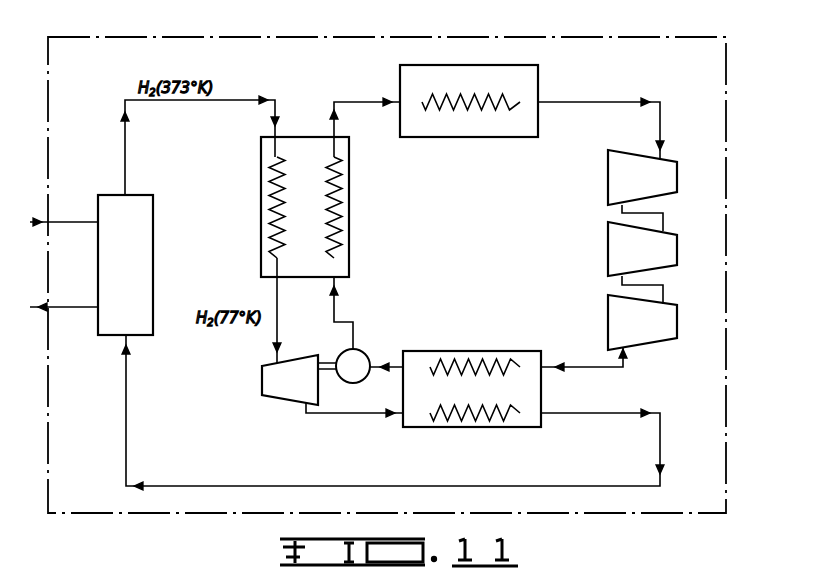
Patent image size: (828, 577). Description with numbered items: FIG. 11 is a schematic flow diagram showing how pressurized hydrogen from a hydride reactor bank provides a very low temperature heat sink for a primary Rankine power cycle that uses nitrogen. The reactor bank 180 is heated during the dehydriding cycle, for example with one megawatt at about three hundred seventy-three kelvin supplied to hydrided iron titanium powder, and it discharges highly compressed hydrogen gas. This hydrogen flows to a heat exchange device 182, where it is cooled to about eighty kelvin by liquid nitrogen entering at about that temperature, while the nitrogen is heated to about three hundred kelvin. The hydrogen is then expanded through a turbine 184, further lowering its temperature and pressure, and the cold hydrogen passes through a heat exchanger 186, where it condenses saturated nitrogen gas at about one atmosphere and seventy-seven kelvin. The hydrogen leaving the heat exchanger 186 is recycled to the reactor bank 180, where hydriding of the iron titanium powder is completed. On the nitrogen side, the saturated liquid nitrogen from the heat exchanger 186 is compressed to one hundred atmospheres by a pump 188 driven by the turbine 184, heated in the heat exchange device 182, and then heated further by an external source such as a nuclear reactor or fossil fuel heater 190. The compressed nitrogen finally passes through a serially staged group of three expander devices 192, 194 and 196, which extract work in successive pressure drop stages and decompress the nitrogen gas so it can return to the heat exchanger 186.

The reactor bank 180 is at (155, 265).
The heat exchange device 182 is at (261, 203).
The turbine 184 is at (280, 402).
The heat exchanger 186 is at (463, 352).
The pump 188 is at (360, 352).
The heater 190 is at (447, 132).
The expander device 192 is at (608, 182).
The expander device 194 is at (608, 245).
The expander device 196 is at (608, 316).